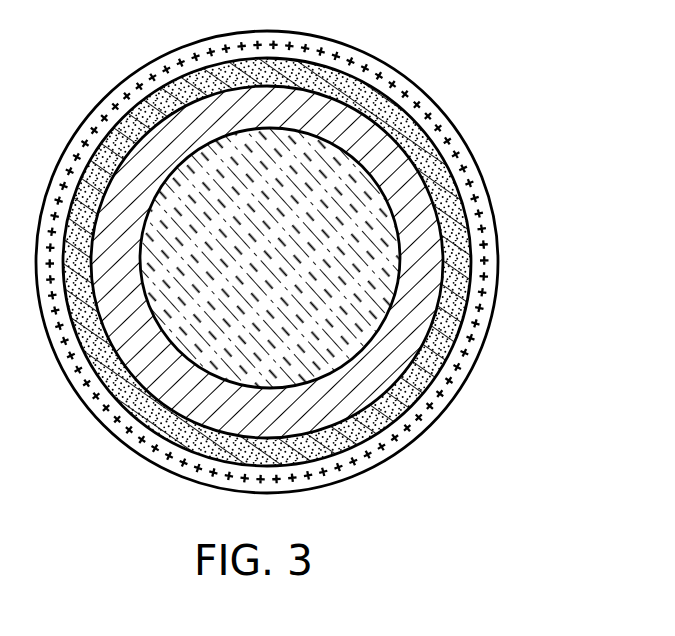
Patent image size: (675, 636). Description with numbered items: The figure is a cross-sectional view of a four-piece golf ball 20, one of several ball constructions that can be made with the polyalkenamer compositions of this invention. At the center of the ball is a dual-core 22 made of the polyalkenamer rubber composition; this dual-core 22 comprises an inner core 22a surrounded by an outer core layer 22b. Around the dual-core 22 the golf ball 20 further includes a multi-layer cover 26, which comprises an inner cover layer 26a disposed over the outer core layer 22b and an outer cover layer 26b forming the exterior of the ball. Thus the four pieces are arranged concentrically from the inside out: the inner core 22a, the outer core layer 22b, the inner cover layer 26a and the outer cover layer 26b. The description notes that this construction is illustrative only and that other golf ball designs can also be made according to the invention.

The four-piece golf ball 20 is at (421, 36).
The dual-core 22 is at (350, 262).
The inner core 22a is at (357, 192).
The outer core layer 22b is at (425, 245).
The multi-layer cover 26 is at (318, 261).
The inner cover layer 26a is at (443, 352).
The outer cover layer 26b is at (438, 392).